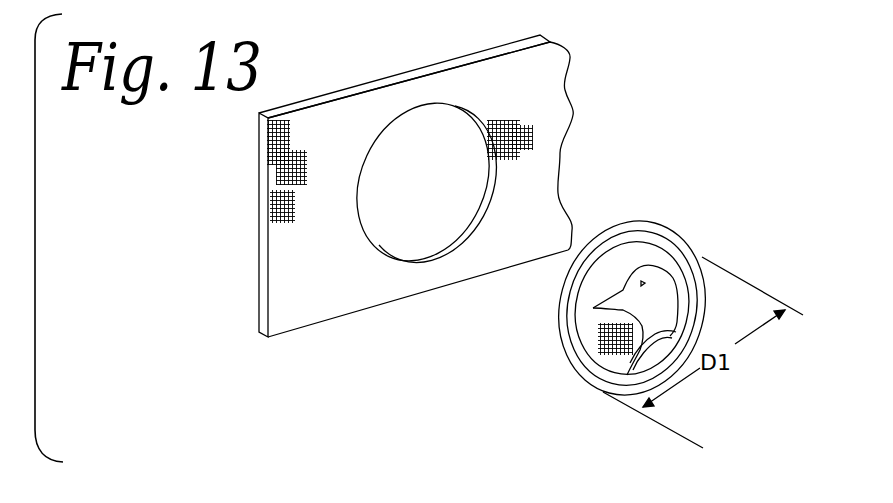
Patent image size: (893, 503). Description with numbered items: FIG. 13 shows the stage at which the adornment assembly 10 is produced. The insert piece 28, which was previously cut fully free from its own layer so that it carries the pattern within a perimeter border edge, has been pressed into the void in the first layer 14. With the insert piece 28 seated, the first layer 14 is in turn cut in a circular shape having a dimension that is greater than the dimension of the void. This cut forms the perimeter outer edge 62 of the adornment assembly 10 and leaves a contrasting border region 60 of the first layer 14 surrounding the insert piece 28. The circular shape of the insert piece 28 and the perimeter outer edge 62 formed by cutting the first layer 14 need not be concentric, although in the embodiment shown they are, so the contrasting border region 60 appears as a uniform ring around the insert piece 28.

The first layer 14 is at (340, 122).
The adornment assembly 10 is at (649, 314).
The contrasting border region 60 is at (583, 362).
The perimeter outer edge 62 is at (562, 313).
The insert piece 28 is at (655, 260).